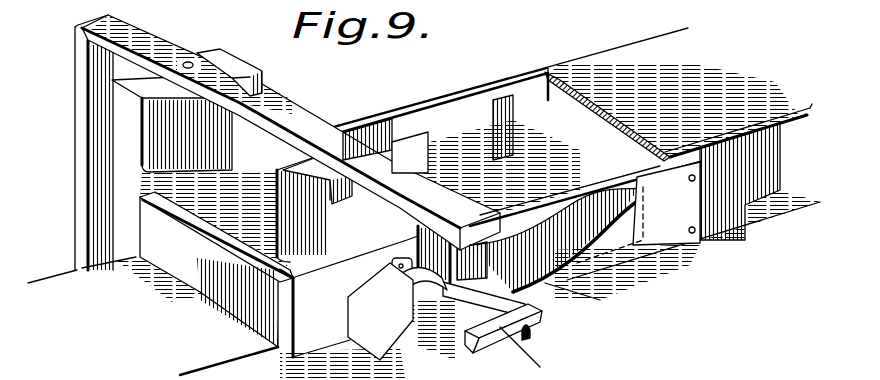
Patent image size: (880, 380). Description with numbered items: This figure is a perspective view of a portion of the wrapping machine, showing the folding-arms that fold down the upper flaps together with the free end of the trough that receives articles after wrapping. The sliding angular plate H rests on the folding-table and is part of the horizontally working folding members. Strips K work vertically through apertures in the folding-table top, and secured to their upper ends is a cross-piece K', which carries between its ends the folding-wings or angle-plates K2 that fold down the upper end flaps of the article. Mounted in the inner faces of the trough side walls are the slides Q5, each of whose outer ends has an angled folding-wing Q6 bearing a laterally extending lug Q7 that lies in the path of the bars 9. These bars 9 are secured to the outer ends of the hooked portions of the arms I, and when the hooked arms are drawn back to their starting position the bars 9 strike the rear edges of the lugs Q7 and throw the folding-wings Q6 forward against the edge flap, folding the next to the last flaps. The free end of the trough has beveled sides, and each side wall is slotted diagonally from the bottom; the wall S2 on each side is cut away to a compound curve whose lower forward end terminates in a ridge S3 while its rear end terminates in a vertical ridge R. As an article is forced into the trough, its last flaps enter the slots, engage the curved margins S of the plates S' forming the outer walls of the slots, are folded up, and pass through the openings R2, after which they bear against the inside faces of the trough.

The sliding angular plate H is at (216, 258).
The strips K is at (193, 142).
The cross-piece K' is at (291, 132).
The folding-wings or angle-plates K2 is at (264, 86).
The vertical ridge R is at (492, 130).
The openings R2 is at (548, 100).
The slides Q5 is at (535, 232).
The folding-wing Q6 is at (349, 296).
The lug Q7 is at (440, 337).
The bars 9 is at (460, 272).
The curved margins S is at (585, 228).
The plates S' is at (638, 238).
The wall S2 is at (580, 282).
The ridge S3 is at (532, 353).
The arms I is at (497, 340).